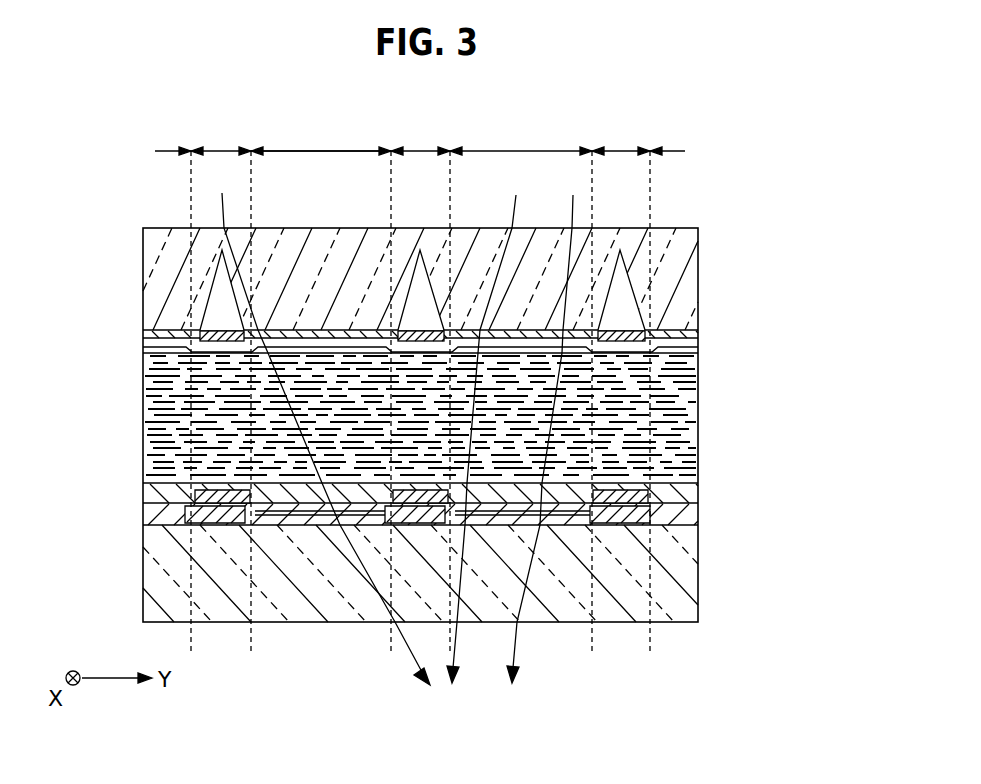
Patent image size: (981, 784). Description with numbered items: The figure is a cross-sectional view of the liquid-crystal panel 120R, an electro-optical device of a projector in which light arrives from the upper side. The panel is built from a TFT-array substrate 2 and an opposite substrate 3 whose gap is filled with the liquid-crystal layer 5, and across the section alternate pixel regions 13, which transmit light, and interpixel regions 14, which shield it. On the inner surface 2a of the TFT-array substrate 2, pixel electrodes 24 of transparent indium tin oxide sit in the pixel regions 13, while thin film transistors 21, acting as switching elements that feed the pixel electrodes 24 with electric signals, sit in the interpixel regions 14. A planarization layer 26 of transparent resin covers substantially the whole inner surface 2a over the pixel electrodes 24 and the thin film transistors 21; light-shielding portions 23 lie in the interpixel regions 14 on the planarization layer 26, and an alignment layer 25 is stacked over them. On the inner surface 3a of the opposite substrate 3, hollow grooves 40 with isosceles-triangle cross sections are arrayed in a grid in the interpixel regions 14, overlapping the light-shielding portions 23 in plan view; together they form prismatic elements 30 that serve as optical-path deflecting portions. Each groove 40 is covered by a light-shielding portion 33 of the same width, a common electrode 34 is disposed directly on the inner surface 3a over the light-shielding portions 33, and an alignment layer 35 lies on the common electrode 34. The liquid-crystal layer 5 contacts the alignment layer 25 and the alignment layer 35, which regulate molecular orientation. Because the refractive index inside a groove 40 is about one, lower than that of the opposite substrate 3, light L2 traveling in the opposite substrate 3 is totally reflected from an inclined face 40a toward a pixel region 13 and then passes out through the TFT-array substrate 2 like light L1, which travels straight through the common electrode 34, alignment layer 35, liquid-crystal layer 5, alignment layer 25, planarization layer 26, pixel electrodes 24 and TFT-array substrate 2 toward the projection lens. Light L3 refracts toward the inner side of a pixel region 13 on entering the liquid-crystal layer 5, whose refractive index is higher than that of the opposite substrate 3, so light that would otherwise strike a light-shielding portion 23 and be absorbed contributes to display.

The liquid-crystal panel 120R is at (707, 200).
The TFT-array substrate 2 is at (680, 570).
The inner surface of the TFT-array substrate 2a is at (178, 522).
The opposite substrate 3 is at (680, 252).
The inner surface of the opposite substrate 3a is at (158, 348).
The liquid-crystal layer 5 is at (143, 427).
The pixel region 13 is at (325, 147).
The interpixel region 14 is at (220, 147).
The thin film transistor 21 is at (675, 516).
The light-shielding portion 23 is at (660, 482).
The pixel electrode 24 is at (560, 522).
The alignment layer 25 is at (150, 494).
The planarization layer 26 is at (150, 514).
The prismatic element 30 is at (212, 264).
The light-shielding portion 33 is at (650, 300).
The common electrode 34 is at (700, 332).
The alignment layer 35 is at (685, 348).
The groove 40 is at (208, 322).
The inclined face of the groove 40a is at (412, 262).
The light L1 is at (546, 423).
The light L2 is at (318, 426).
The light L3 is at (488, 423).